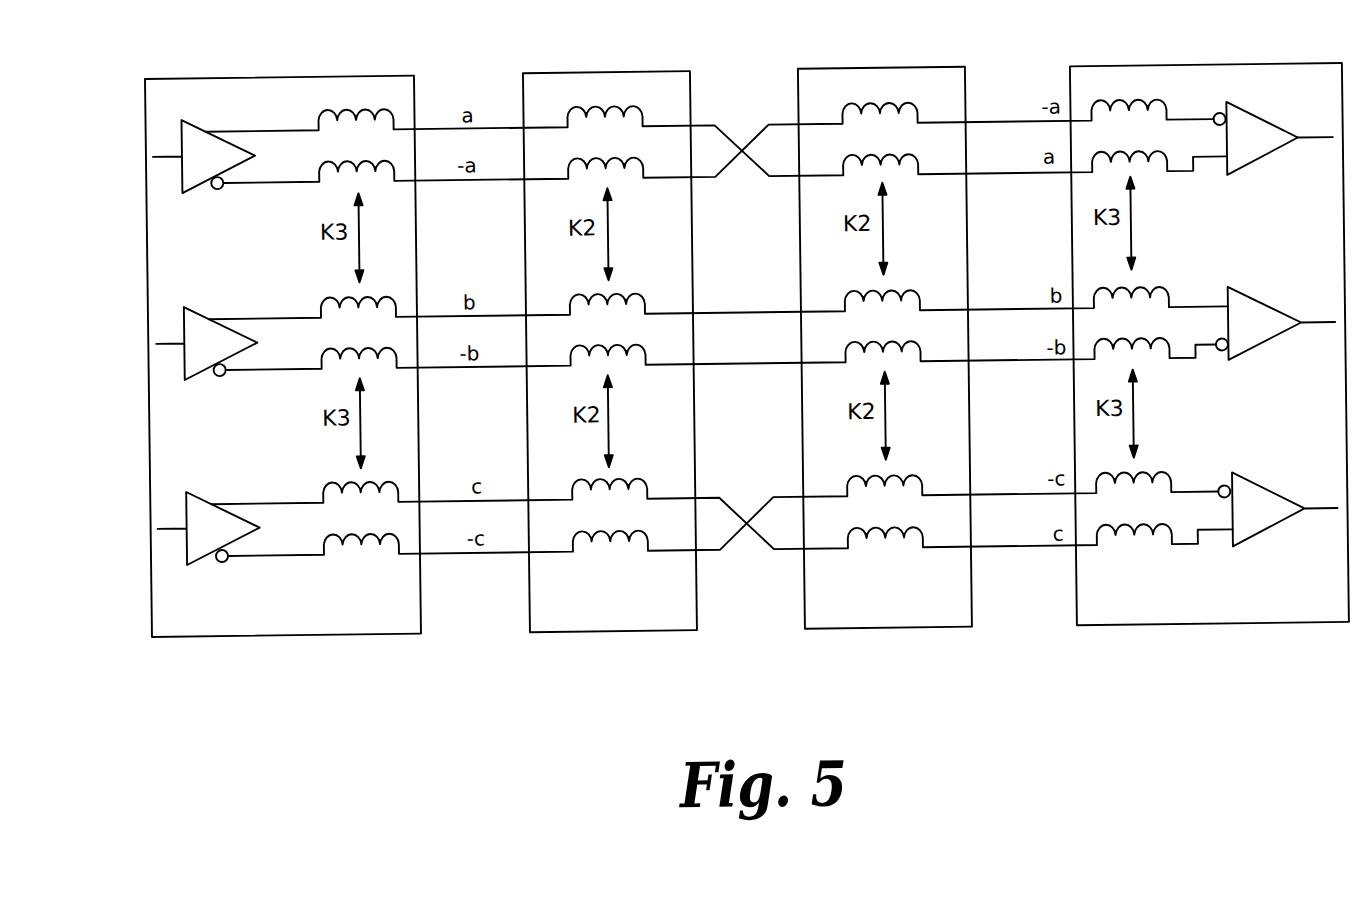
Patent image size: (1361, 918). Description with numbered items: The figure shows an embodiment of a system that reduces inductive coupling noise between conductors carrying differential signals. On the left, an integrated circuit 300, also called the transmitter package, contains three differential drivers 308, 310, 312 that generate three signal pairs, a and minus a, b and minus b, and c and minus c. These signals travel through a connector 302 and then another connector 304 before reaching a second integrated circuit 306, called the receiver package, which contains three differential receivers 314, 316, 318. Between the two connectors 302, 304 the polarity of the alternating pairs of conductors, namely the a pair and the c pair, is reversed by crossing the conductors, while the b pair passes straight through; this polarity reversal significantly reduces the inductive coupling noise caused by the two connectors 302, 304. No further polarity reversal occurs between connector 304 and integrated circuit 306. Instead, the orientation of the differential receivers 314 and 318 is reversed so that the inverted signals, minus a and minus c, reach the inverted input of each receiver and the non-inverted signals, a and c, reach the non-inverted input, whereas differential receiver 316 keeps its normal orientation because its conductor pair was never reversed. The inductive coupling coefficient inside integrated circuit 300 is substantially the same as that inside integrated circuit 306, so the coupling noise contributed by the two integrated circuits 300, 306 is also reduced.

The integrated circuit 300 is at (158, 78).
The connector 302 is at (535, 77).
The connector 304 is at (808, 76).
The integrated circuit 306 is at (1084, 77).
The differential driver 308 is at (192, 191).
The differential driver 310 is at (191, 378).
The differential driver 312 is at (191, 564).
The differential receiver 314 is at (1236, 184).
The differential receiver 316 is at (1236, 371).
The differential receiver 318 is at (1237, 559).